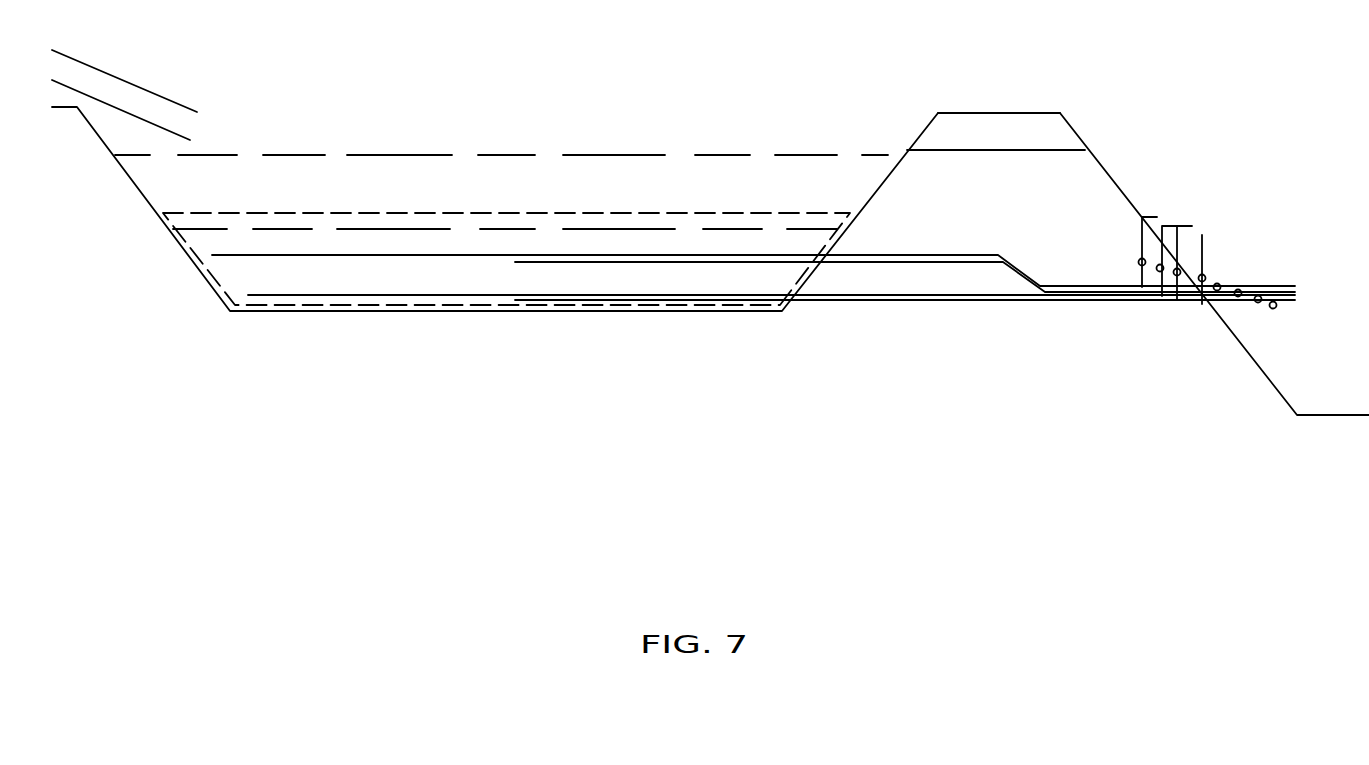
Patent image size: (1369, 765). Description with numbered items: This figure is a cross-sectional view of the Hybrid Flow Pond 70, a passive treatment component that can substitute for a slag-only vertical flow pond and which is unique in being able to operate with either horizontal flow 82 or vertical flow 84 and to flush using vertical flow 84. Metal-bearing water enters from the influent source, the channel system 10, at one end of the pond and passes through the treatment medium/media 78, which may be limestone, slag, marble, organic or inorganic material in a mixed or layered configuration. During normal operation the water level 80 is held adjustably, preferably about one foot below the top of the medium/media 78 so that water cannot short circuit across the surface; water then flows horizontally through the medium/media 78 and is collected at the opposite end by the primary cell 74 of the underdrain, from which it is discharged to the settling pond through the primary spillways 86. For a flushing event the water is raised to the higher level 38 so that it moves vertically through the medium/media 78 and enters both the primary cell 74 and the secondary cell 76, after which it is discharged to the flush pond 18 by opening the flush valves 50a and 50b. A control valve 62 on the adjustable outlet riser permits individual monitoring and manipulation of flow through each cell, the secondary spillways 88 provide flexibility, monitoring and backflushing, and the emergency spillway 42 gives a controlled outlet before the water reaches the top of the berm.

The channel system 10 is at (132, 102).
The flush pond 18 is at (1214, 266).
The additional water storage depth 38 is at (697, 157).
The emergency spillway 42 is at (996, 133).
The flush valve 50a is at (1236, 296).
The flush valve 50b is at (1258, 302).
The control valve 62 is at (1205, 278).
The Hybrid Flow Pond 70 is at (498, 62).
The primary cell 74 is at (745, 300).
The secondary cell 76 is at (358, 294).
The treatment medium/media 78 is at (203, 212).
The water level 80 is at (348, 228).
The horizontal flow 82 is at (450, 277).
The vertical flow 84 is at (497, 290).
The primary spillway 86 is at (1172, 222).
The secondary spillway 88 is at (1160, 230).